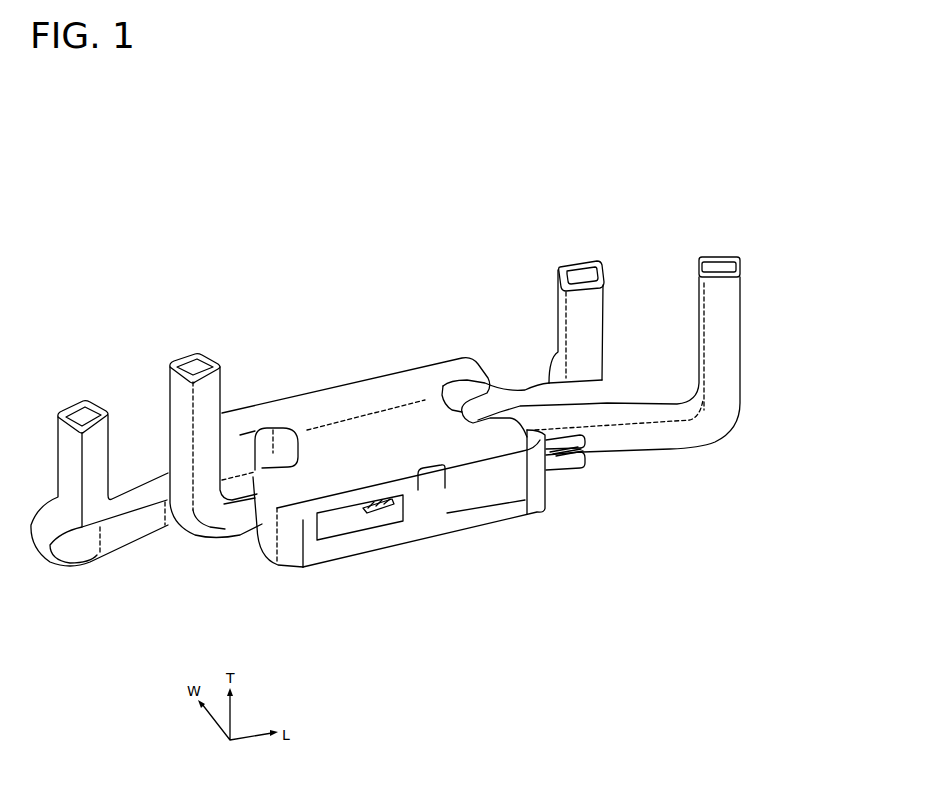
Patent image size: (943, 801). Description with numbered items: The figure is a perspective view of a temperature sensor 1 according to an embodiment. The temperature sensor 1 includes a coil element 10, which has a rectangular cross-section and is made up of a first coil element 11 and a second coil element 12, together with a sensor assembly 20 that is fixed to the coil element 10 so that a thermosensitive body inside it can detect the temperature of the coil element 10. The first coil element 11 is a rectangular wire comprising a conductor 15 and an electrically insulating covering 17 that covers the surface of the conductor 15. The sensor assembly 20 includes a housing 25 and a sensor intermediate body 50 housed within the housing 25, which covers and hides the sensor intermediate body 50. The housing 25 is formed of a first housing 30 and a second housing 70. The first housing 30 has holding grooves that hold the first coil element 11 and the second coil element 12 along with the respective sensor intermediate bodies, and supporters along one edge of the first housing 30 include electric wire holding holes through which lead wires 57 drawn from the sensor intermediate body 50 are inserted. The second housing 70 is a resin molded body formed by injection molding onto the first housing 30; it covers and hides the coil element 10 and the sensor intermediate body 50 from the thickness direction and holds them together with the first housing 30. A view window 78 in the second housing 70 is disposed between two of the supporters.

The temperature sensor 1 is at (460, 205).
The coil element 10 is at (678, 204).
The first coil element 11 is at (705, 255).
The second coil element 12 is at (587, 261).
The conductor 15 is at (78, 414).
The electrically insulating covering 17 is at (100, 408).
The sensor assembly 20 is at (337, 376).
The housing 25 is at (383, 376).
The first housing 30 is at (433, 538).
The sensor intermediate body 50 is at (400, 514).
The lead wires 57 is at (586, 440).
The second housing 70 is at (263, 402).
The view window 78 is at (335, 525).